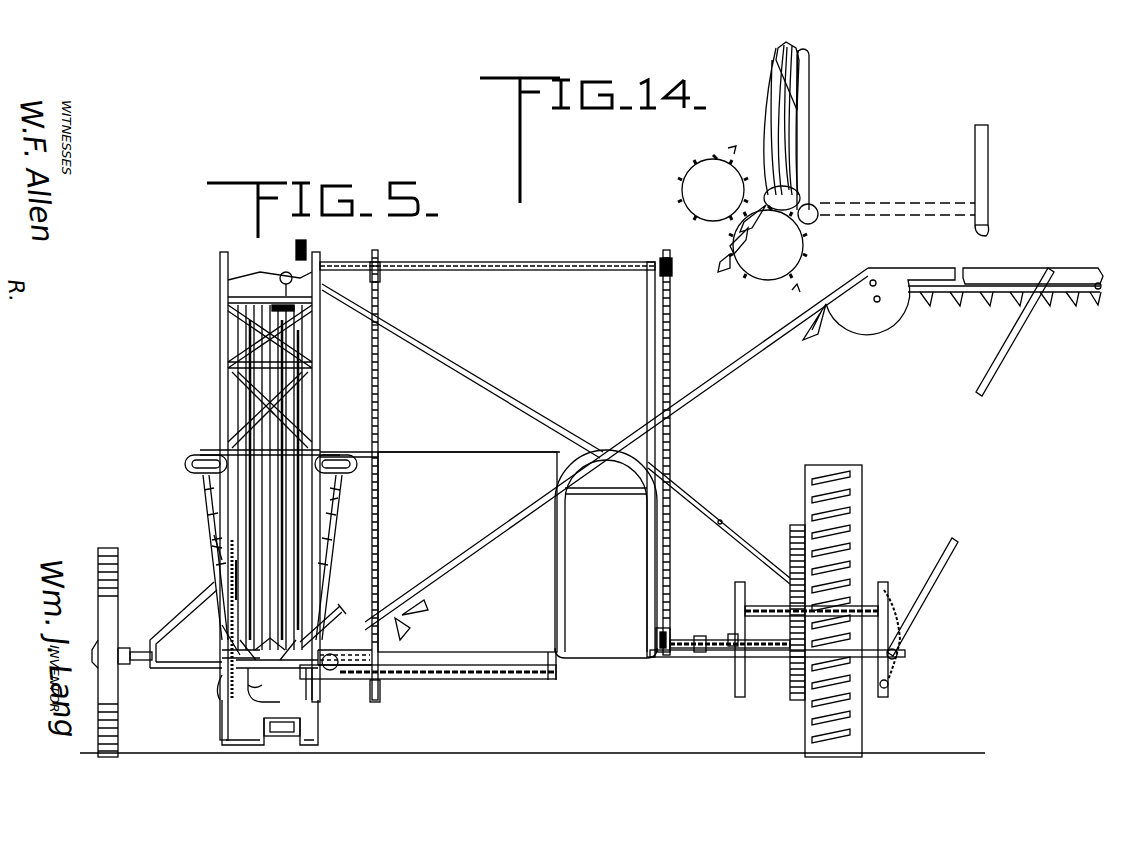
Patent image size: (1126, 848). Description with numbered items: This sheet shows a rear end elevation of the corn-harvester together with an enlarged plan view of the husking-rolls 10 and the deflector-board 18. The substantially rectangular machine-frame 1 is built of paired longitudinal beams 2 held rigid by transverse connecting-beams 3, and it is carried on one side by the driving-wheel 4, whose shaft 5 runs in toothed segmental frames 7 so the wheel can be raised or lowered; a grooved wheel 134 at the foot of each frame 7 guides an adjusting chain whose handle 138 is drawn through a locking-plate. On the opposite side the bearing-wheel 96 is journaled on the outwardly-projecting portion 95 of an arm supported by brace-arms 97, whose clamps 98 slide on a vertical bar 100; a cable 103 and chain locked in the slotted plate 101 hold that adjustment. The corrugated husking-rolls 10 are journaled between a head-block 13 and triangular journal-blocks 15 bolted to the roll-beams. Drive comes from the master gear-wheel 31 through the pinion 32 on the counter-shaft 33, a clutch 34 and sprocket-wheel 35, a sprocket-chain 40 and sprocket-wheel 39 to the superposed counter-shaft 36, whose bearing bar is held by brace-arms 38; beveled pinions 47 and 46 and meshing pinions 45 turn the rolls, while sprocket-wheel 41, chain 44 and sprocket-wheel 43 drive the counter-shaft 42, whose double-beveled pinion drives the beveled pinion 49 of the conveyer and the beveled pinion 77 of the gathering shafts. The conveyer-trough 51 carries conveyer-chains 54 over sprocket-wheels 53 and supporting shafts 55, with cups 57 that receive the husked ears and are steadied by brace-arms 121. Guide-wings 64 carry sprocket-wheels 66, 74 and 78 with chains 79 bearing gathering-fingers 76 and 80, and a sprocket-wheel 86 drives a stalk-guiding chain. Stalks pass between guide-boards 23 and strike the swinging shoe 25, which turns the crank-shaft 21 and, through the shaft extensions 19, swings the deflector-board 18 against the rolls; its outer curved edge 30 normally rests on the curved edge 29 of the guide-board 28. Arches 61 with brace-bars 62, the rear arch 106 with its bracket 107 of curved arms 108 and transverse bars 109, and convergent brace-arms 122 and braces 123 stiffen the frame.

In FIG. 5, the machine-frame 1 is at (440, 552).
In FIG. 5, the longitudinal beams 2 is at (898, 654).
In FIG. 5, the transverse connecting-beams 3 is at (710, 657).
In FIG. 5, the driving-wheel 4 is at (850, 540).
In FIG. 5, the shaft 5 is at (758, 606).
In FIG. 5, the segmental frames 7 is at (735, 598).
In FIG. 5, the husking-rolls 10 is at (250, 500).
In FIG. 14, the husking-rolls 10 is at (742, 219).
In FIG. 5, the head-block 13 is at (228, 304).
In FIG. 5, the journal-blocks 15 is at (222, 640).
In FIG. 14, the deflector-board 18 is at (809, 130).
In FIG. 14, the shaft extensions 19 is at (818, 220).
In FIG. 5, the crank-shaft 21 is at (314, 690).
In FIG. 5, the guide-boards 23 is at (276, 725).
In FIG. 5, the swinging shoe 25 is at (282, 734).
In FIG. 14, the guide-board 28 is at (988, 182).
In FIG. 14, the curved edge 29 is at (978, 235).
In FIG. 14, the outer curved edge 30 is at (810, 52).
In FIG. 5, the master gear-wheel 31 is at (790, 540).
In FIG. 5, the pinion 32 is at (790, 650).
In FIG. 5, the counter-shaft 33 is at (752, 640).
In FIG. 5, the clutch 34 is at (684, 636).
In FIG. 5, the sprocket-wheel 35 is at (656, 628).
In FIG. 5, the superposed counter-shaft 36 is at (487, 280).
In FIG. 5, the brace-arms 38 is at (647, 344).
In FIG. 5, the sprocket-wheel 39 is at (672, 276).
In FIG. 5, the sprocket-chain 40 is at (670, 340).
In FIG. 5, the sprocket-wheel 41 is at (378, 282).
In FIG. 5, the counter-shaft 42 is at (410, 680).
In FIG. 5, the sprocket-wheel 43 is at (380, 690).
In FIG. 5, the chain 44 is at (378, 326).
In FIG. 5, the pinions 45 is at (300, 302).
In FIG. 5, the beveled pinion 46 is at (270, 278).
In FIG. 5, the beveled pinion 47 is at (296, 248).
In FIG. 5, the beveled pinion 49 is at (332, 676).
In FIG. 5, the conveyer-trough 51 is at (458, 566).
In FIG. 5, the sprocket-wheels 53 is at (1098, 296).
In FIG. 5, the conveyer-chains 54 is at (972, 296).
In FIG. 5, the parallel shafts 55 is at (875, 282).
In FIG. 5, the cups 57 is at (818, 336).
In FIG. 5, the arches 61 is at (565, 550).
In FIG. 5, the brace-bars 62 is at (606, 500).
In FIG. 5, the guide-wings 64 is at (186, 466).
In FIG. 5, the sprocket-wheel 66 is at (290, 682).
In FIG. 5, the sprocket-wheel 74 is at (200, 460).
In FIG. 5, the gathering-fingers 76 is at (205, 492).
In FIG. 5, the beveled pinion 77 is at (348, 695).
In FIG. 5, the sprocket-wheel 78 is at (340, 458).
In FIG. 5, the sprocket-chain 79 is at (330, 518).
In FIG. 5, the gathering-fingers 80 is at (338, 512).
In FIG. 5, the sprocket-wheel 86 is at (318, 622).
In FIG. 5, the outwardly-projecting portion 95 is at (138, 650).
In FIG. 5, the bearing-wheel 96 is at (118, 590).
In FIG. 5, the brace-arms 97 is at (180, 618).
In FIG. 5, the clamp 98 is at (232, 588).
In FIG. 5, the vertical bar 100 is at (228, 440).
In FIG. 5, the plate 101 is at (212, 546).
In FIG. 5, the cable 103 is at (218, 690).
In FIG. 5, the arch 106 is at (212, 530).
In FIG. 5, the bracket 107 is at (236, 410).
In FIG. 5, the oppositely-curved arms 108 is at (276, 410).
In FIG. 5, the transverse bars 109 is at (240, 362).
In FIG. 5, the brace-arms 121 is at (940, 575).
In FIG. 5, the convergent brace-arms 122 is at (705, 514).
In FIG. 5, the braces 123 is at (470, 372).
In FIG. 5, the grooved wheel 134 is at (890, 684).
In FIG. 5, the handle 138 is at (904, 624).